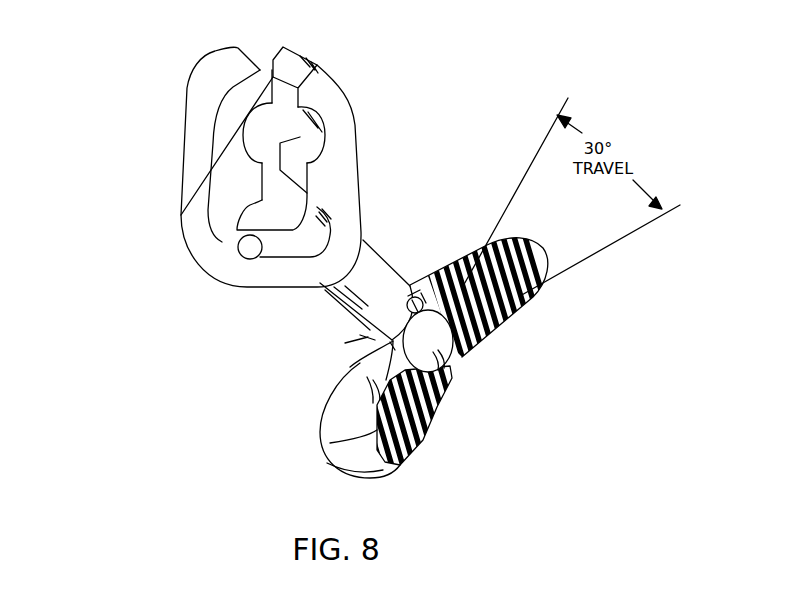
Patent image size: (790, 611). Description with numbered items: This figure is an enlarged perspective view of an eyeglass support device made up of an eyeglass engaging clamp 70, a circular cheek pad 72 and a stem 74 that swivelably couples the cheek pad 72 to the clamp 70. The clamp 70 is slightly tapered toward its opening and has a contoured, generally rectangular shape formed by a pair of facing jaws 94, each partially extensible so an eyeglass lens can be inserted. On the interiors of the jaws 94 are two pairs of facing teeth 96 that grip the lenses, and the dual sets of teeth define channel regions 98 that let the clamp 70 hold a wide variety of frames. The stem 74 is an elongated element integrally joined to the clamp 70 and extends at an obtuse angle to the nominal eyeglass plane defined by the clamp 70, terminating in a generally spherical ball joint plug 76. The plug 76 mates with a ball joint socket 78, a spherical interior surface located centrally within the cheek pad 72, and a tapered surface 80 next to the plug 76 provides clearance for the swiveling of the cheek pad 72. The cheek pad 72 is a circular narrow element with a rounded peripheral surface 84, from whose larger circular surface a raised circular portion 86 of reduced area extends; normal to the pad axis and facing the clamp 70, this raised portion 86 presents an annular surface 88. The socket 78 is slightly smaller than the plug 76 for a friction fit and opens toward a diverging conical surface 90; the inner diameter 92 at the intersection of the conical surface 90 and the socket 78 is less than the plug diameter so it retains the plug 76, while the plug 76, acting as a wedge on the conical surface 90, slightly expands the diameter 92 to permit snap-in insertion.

The eyeglass engaging clamp 70 is at (138, 39).
The circular cheek pad 72 is at (266, 391).
The stem 74 is at (365, 242).
The ball joint plug 76 is at (457, 367).
The ball joint socket 78 is at (473, 347).
The tapered surface 80 is at (360, 338).
The rounded peripheral surface 84 is at (325, 466).
The raised circular portion 86 is at (332, 390).
The annular surface 88 is at (360, 363).
The diverging conical surface 90 is at (411, 298).
The inner diameter 92 is at (418, 301).
The facing jaws 94 is at (188, 90).
The facing teeth 96 is at (270, 67).
The channel regions 98 is at (296, 122).